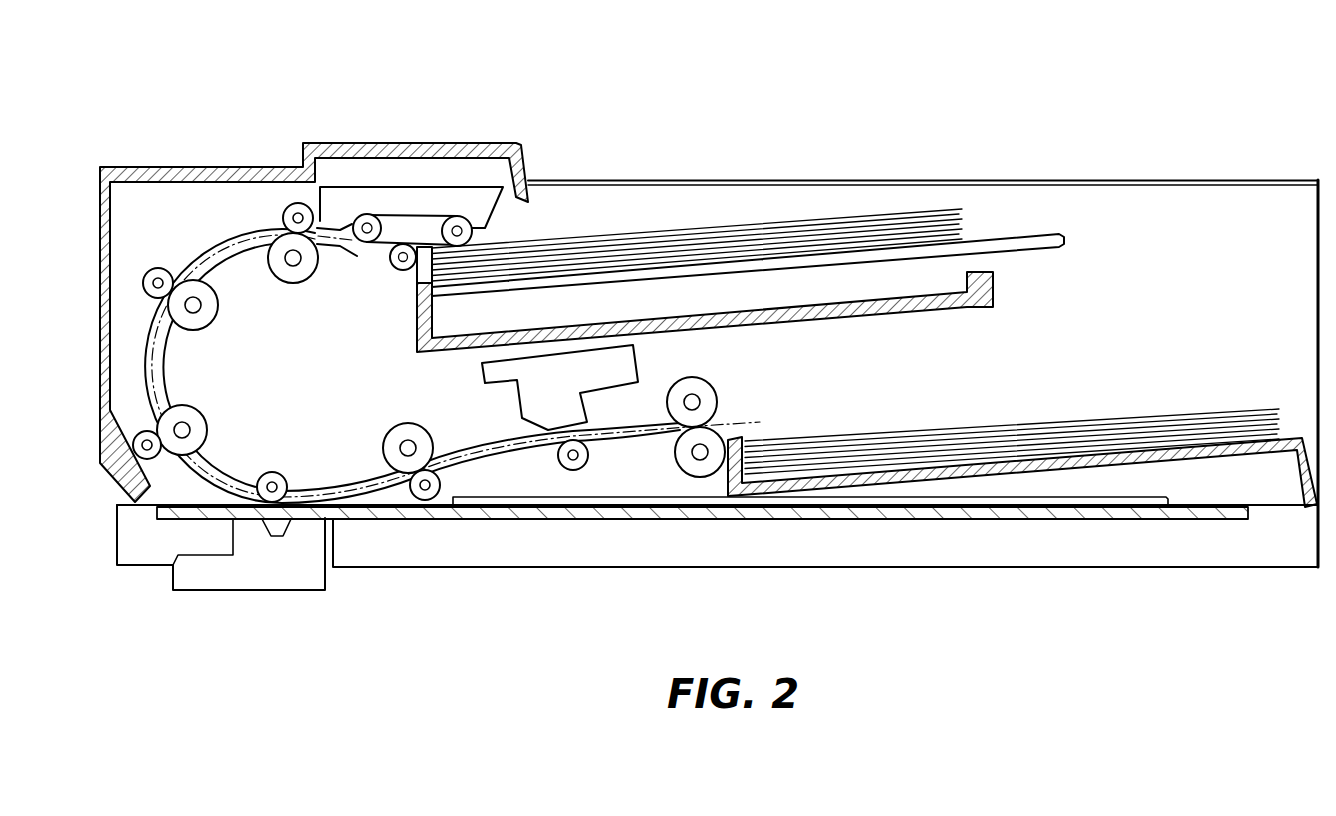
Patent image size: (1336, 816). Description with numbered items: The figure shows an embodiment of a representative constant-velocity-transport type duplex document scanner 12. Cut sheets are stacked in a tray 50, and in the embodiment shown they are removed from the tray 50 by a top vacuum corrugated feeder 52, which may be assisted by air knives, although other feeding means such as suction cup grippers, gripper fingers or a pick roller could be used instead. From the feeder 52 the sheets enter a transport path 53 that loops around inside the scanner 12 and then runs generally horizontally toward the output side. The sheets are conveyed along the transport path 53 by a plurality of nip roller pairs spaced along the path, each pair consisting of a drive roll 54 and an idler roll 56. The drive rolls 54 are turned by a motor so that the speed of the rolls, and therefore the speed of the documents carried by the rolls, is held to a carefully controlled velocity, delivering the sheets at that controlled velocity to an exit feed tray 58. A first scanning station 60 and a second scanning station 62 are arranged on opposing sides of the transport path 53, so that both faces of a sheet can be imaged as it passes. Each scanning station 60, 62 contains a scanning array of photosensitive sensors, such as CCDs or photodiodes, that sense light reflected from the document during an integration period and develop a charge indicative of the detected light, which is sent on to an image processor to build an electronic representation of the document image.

The duplex document scanner 12 is at (459, 62).
The tray 50 is at (614, 232).
The top vacuum corrugated feeder 52 is at (435, 200).
The transport path 53 is at (147, 345).
The drive roll 54 is at (291, 206).
The idler roll 56 is at (296, 276).
The exit feed tray 58 is at (845, 442).
The first scanning station 60 is at (250, 583).
The second scanning station 62 is at (481, 366).